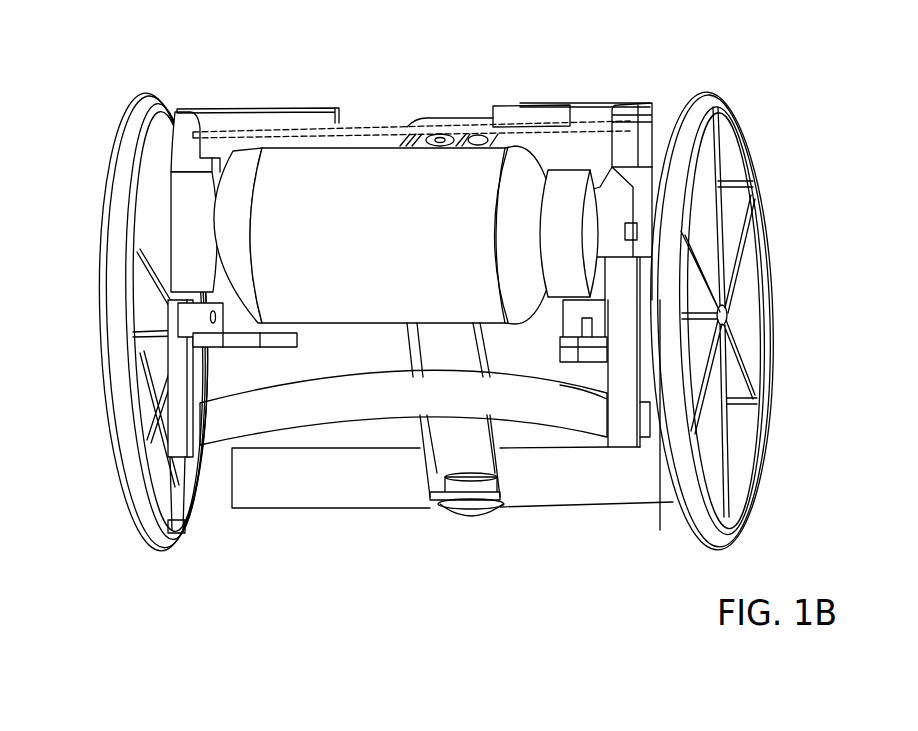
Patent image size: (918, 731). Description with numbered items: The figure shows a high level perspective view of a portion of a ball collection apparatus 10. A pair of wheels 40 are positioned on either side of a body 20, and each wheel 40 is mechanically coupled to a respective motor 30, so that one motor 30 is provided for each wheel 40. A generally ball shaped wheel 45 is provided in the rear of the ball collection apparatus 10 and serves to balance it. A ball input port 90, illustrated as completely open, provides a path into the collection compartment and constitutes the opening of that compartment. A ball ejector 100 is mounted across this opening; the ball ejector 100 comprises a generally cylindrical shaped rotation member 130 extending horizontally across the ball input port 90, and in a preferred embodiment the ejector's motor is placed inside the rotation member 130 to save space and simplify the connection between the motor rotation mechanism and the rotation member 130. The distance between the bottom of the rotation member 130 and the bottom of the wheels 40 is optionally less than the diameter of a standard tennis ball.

The ball collection apparatus 10 is at (436, 81).
The body 20 is at (507, 112).
The motor 30 is at (307, 333).
The wheel 40 is at (111, 315).
The generally ball shaped wheel 45 is at (473, 521).
The ball input port 90 is at (250, 383).
The ball ejector 100 is at (505, 172).
The rotation member 130 is at (366, 168).